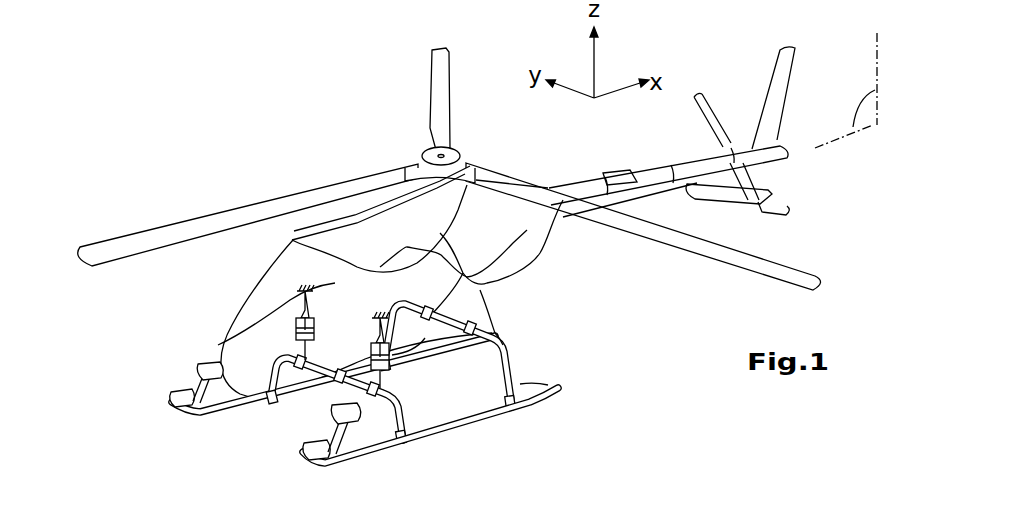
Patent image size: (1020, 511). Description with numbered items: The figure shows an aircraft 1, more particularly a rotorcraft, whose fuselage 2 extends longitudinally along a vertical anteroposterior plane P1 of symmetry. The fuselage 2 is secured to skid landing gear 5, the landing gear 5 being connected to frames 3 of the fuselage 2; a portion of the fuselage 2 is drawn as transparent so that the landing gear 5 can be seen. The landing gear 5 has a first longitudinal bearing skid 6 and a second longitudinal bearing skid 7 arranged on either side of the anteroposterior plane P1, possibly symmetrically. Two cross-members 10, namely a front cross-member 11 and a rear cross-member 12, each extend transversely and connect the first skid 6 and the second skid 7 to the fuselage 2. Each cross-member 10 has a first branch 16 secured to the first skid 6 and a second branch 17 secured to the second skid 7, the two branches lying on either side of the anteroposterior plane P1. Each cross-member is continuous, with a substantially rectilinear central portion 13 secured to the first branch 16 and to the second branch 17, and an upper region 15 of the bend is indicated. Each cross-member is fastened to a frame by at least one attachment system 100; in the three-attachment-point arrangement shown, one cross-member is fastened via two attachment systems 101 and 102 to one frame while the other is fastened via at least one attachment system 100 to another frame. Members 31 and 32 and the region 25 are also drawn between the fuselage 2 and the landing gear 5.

The aircraft 1 is at (303, 133).
The fuselage 2 is at (270, 268).
The frames 3 is at (302, 283).
The skid landing gear 5 is at (604, 396).
The first skid 6 is at (238, 412).
The second skid 7 is at (468, 422).
The cross-members 10 is at (598, 380).
The front cross-member 11 is at (413, 385).
The rear cross-member 12 is at (512, 353).
The central portion 13 is at (305, 383).
The upper portion of cross member 15 is at (514, 324).
The first branch 16 is at (273, 368).
The second branch 17 is at (536, 397).
The cabin floor 25 is at (258, 313).
The first damper 31 is at (294, 326).
The second damper 32 is at (351, 347).
The attachment system 100 is at (330, 385).
The attachment system 101 is at (427, 312).
The attachment system 102 is at (505, 330).
The anteroposterior plane P1 is at (870, 110).